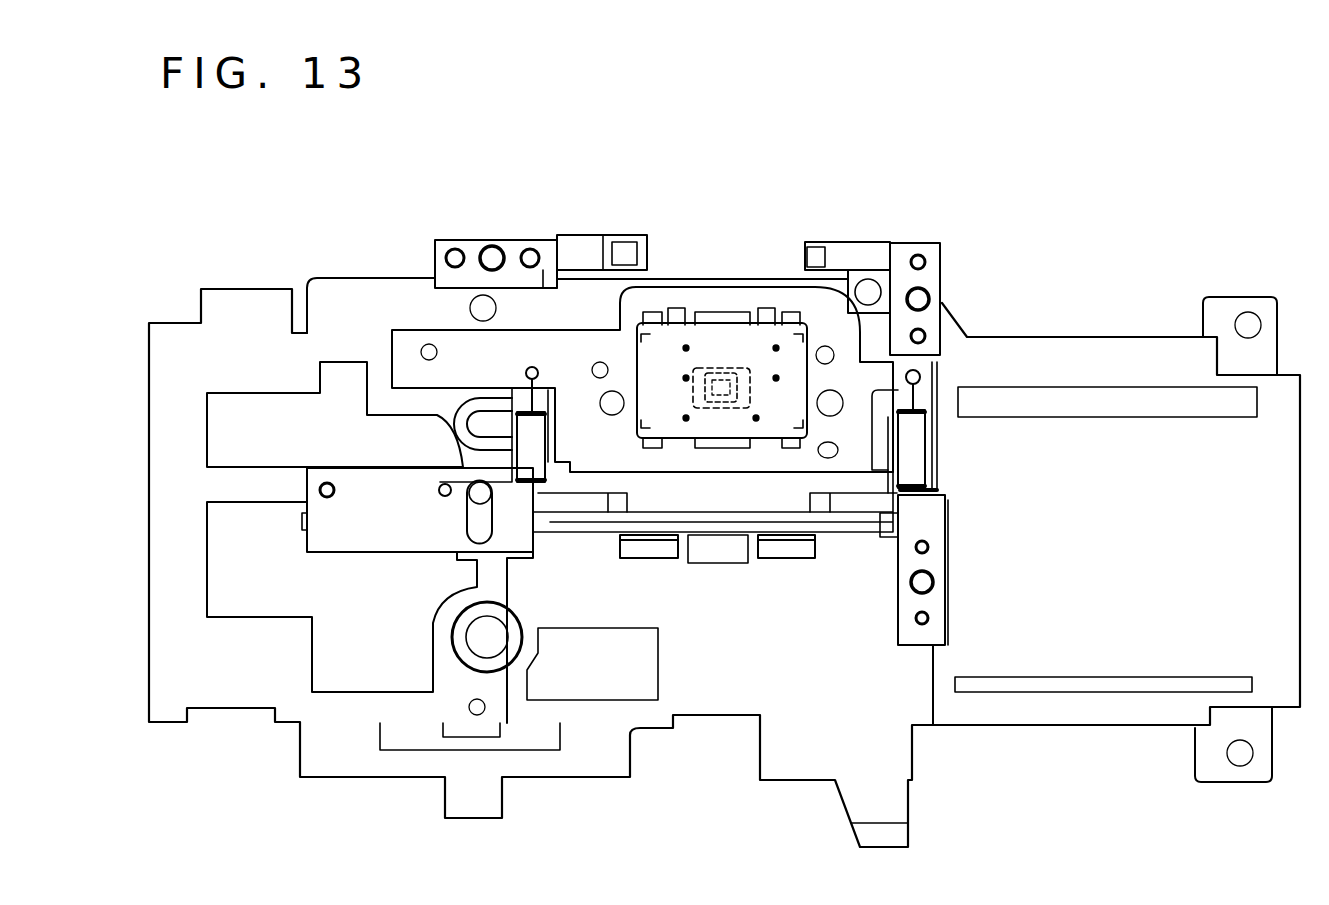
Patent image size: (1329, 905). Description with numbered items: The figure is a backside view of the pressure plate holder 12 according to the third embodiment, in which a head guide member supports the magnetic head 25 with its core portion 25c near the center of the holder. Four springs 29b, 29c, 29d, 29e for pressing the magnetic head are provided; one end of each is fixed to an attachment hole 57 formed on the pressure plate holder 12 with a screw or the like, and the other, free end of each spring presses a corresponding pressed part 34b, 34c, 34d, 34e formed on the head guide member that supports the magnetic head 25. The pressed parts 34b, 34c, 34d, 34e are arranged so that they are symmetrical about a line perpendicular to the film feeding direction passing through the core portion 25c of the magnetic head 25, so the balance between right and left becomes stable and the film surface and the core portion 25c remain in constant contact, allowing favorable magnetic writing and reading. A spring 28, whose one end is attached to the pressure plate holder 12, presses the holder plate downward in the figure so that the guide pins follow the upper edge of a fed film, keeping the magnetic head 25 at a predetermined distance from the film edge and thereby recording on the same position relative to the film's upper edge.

The pressure plate holder 12 is at (247, 305).
The magnetic head 25 is at (686, 336).
The core portion 25c is at (752, 385).
The spring 28 is at (925, 428).
The spring for pressing magnetic head 29b is at (388, 530).
The spring for pressing magnetic head 29c is at (940, 510).
The spring for pressing magnetic head 29d is at (537, 250).
The spring for pressing magnetic head 29e is at (940, 252).
The pressed part 34b is at (641, 502).
The pressed part 34c is at (797, 502).
The pressed part 34d is at (650, 250).
The pressed part 34e is at (795, 240).
The attachment hole 57 is at (494, 254).